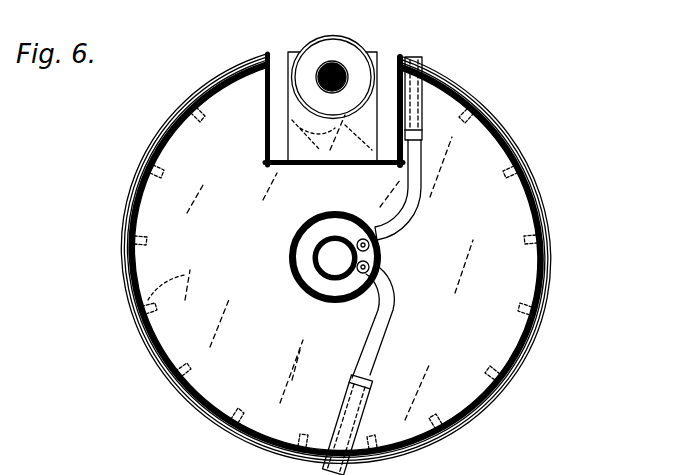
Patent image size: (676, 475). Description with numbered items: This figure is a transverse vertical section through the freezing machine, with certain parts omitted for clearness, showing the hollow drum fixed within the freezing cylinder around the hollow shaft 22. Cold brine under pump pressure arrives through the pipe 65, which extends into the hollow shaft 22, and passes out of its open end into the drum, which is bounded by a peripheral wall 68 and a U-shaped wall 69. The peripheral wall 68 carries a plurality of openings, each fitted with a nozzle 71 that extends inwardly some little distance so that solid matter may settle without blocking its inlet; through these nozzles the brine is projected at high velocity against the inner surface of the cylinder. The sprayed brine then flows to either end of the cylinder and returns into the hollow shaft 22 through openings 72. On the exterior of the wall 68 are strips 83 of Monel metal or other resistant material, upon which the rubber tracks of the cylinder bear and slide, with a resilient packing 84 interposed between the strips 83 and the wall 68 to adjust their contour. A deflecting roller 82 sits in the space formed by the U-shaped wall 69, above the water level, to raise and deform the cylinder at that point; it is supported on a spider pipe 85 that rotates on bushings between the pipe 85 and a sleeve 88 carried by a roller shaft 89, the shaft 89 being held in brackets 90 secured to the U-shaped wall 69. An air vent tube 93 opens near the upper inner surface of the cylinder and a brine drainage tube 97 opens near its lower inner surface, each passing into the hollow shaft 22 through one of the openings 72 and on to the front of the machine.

The hollow shaft 22 is at (337, 212).
The pipe 65 is at (333, 279).
The peripheral wall 68 is at (214, 408).
The U-shaped wall 69 is at (294, 165).
The nozzle 71 is at (433, 418).
The openings 72 is at (381, 258).
The deflecting roller 82 is at (322, 118).
The strips 83 is at (542, 196).
The resilient packing 84 is at (538, 237).
The spider pipe 85 is at (344, 66).
The sleeve 88 is at (331, 90).
The roller shaft 89 is at (334, 62).
The brackets 90 is at (403, 122).
The air vent tube 93 is at (407, 224).
The brine drainage tube 97 is at (385, 348).